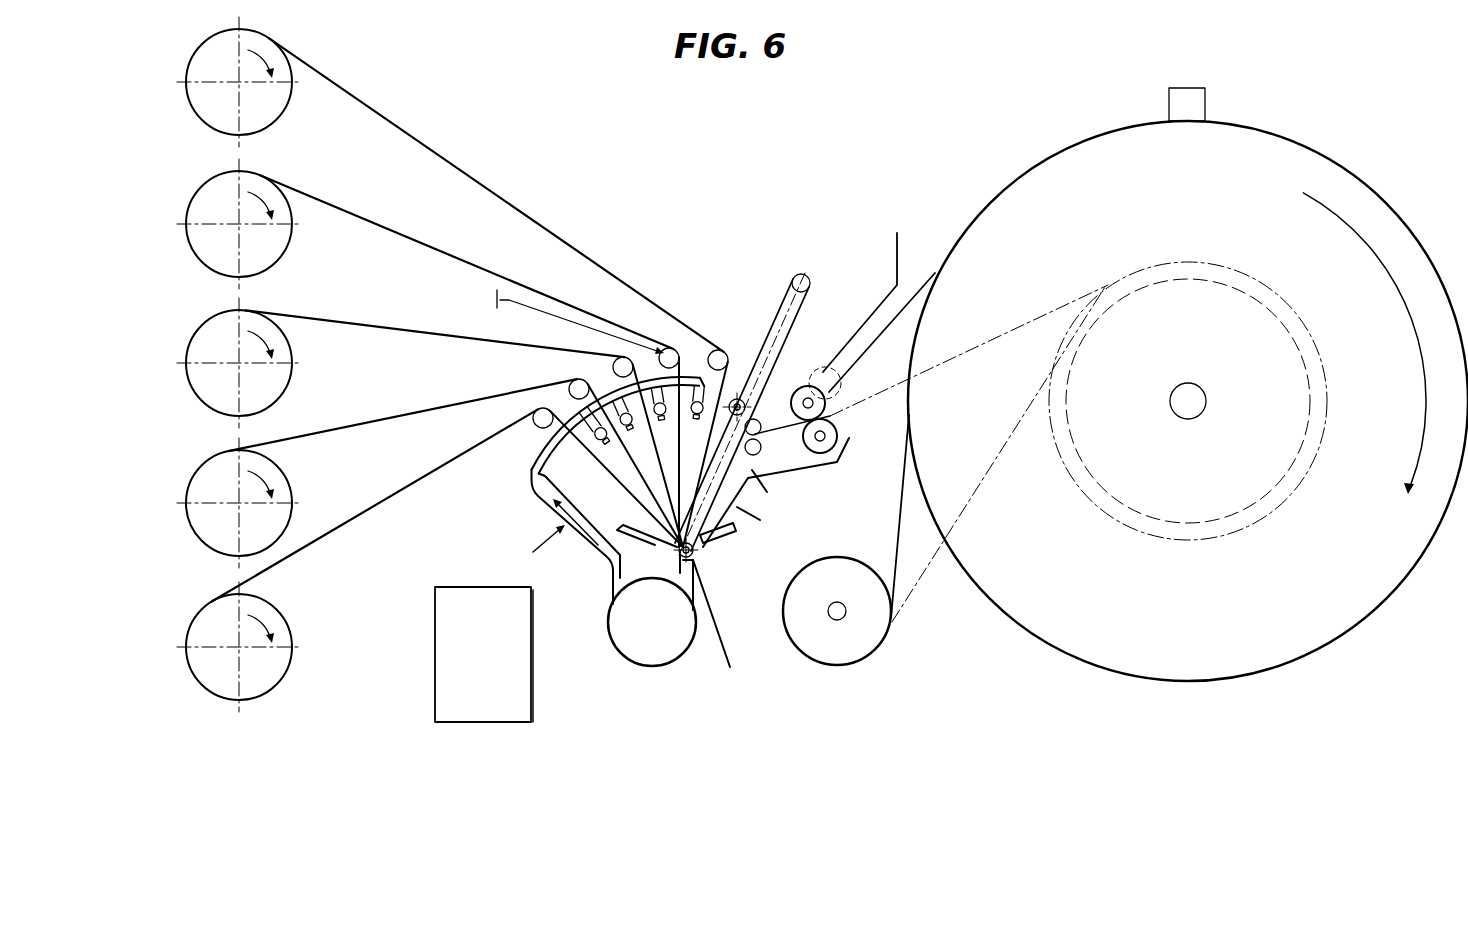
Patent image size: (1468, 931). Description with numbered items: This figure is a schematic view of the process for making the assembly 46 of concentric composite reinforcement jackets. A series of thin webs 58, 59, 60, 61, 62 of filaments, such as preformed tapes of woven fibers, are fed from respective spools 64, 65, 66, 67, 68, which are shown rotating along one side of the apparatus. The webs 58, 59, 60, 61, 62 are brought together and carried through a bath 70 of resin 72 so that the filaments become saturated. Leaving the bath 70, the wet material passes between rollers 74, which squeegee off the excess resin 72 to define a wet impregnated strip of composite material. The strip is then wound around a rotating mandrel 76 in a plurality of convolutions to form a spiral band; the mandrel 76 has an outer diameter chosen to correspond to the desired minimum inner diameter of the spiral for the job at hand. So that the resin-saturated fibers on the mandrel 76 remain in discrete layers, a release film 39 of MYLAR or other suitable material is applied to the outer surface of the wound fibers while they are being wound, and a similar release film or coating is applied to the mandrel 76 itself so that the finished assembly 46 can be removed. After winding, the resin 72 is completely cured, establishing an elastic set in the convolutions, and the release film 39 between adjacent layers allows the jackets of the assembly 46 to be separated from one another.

The release film 39 is at (922, 590).
The assembly of jackets 46 is at (1282, 508).
The web of filaments 58 is at (408, 136).
The web of filaments 59 is at (345, 216).
The web of filaments 60 is at (329, 314).
The web of filaments 61 is at (317, 432).
The web of filaments 62 is at (323, 530).
The spool 64 is at (205, 105).
The spool 65 is at (205, 247).
The spool 66 is at (205, 387).
The spool 67 is at (205, 527).
The spool 68 is at (205, 669).
The bath 70 is at (704, 573).
The resin 72 is at (700, 549).
The rollers 74 is at (838, 422).
The mandrel 76 is at (1237, 530).